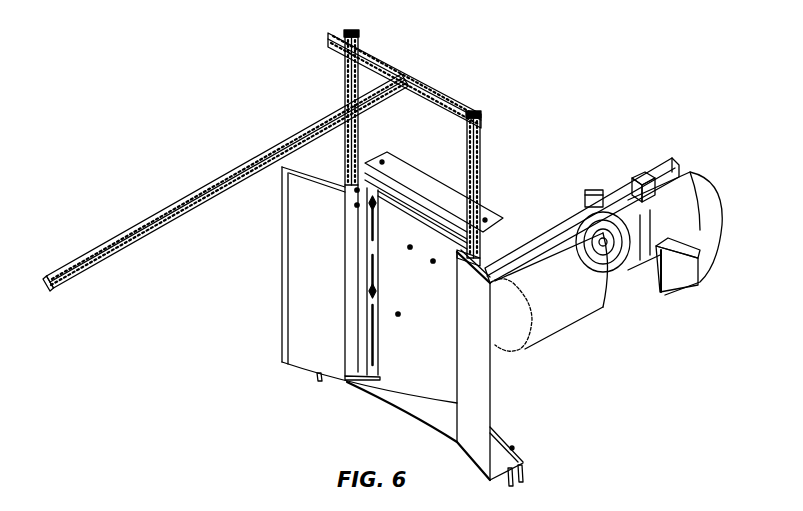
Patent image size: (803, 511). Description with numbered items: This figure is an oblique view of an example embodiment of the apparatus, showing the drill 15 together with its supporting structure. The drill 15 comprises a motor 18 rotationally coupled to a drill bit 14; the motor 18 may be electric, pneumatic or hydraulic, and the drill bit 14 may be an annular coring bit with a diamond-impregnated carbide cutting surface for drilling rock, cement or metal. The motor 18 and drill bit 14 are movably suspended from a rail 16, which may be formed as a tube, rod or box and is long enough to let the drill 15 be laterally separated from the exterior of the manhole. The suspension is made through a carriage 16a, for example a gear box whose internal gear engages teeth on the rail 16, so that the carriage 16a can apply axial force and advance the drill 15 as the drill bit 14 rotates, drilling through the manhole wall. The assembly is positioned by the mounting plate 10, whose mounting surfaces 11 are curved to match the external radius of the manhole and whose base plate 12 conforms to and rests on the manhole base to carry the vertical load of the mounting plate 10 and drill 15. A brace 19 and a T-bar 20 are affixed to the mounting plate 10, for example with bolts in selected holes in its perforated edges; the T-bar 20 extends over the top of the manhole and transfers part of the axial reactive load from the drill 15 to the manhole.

The mounting plate 10 is at (130, 50).
The mounting surfaces 11 is at (300, 322).
The base plate 12 is at (503, 447).
The drill bit 14 is at (563, 315).
The drill 15 is at (600, 135).
The rail 16 is at (557, 232).
The carriage 16a is at (640, 170).
The motor 18 is at (688, 270).
The brace 19 is at (345, 85).
The T-bar 20 is at (90, 258).